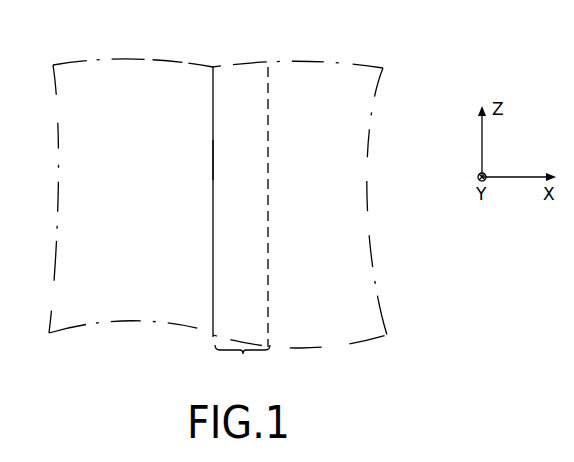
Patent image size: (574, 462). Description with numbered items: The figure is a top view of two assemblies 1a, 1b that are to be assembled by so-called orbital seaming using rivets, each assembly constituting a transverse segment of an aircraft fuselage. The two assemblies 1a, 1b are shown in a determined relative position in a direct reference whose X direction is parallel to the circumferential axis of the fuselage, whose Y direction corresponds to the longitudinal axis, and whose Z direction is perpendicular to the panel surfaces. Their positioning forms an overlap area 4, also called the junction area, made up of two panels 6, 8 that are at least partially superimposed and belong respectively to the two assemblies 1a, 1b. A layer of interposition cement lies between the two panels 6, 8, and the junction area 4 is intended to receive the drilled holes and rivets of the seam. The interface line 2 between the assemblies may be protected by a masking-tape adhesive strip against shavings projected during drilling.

The first assembly 1a is at (108, 50).
The second assembly 1b is at (357, 58).
The interface line 2 is at (212, 150).
The overlap area 4 is at (242, 363).
The first panel 6 is at (193, 75).
The second panel 8 is at (247, 75).